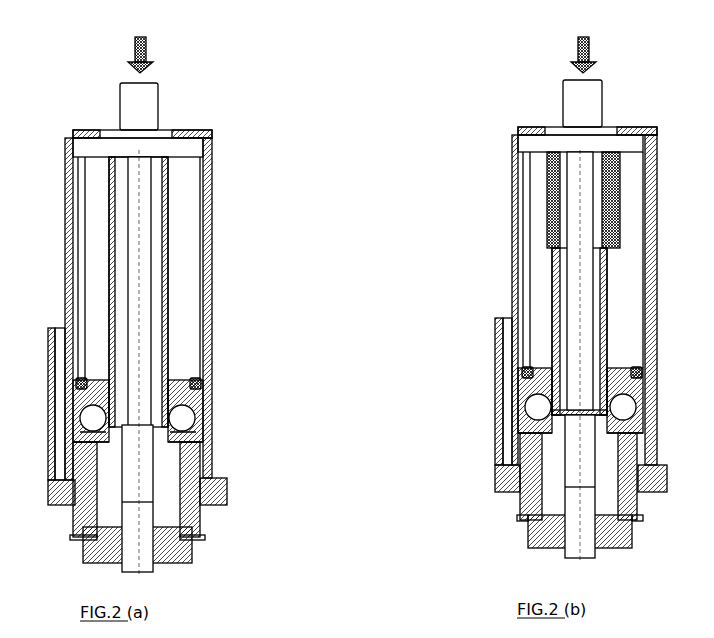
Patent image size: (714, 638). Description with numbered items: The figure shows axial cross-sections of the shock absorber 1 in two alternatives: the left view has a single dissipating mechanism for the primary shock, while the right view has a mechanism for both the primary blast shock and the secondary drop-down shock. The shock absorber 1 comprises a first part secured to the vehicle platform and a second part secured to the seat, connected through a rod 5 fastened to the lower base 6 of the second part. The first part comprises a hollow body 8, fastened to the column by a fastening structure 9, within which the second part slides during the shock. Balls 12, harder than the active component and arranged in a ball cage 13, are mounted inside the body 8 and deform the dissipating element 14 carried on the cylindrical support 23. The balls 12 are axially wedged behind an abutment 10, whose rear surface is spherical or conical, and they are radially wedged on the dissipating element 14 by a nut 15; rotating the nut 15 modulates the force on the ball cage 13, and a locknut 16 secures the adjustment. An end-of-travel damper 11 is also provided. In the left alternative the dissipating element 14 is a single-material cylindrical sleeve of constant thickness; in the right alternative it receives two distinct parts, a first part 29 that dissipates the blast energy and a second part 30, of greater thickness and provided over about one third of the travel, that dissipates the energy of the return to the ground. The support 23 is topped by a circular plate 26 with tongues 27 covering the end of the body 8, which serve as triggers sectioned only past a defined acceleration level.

In FIG. 2A, the shock absorber 1 is at (64, 110).
In FIG. 2A, the rod 5 is at (153, 97).
In FIG. 2A, the tongue 27 is at (210, 132).
In FIG. 2A, the body 8 is at (208, 245).
In FIG. 2A, the support 23 is at (157, 273).
In FIG. 2A, the dissipating element 14 is at (170, 297).
In FIG. 2B, the dissipating element 14 is at (536, 261).
In FIG. 2A, the end-of-travel damper 11 is at (197, 383).
In FIG. 2A, the abutment 10 is at (200, 390).
In FIG. 2A, the ball 12 is at (188, 418).
In FIG. 2A, the ball cage 13 is at (192, 438).
In FIG. 2A, the fastening structure 9 is at (55, 447).
In FIG. 2B, the fastening structure 9 is at (500, 417).
In FIG. 2A, the locknut 16 is at (228, 488).
In FIG. 2A, the nut 15 is at (190, 515).
In FIG. 2A, the lower base of the support 6 is at (183, 550).
In FIG. 2B, the plate 26 is at (518, 129).
In FIG. 2B, the second part of the dissipating element 30 is at (548, 193).
In FIG. 2B, the first part of the dissipating element 29 is at (555, 282).